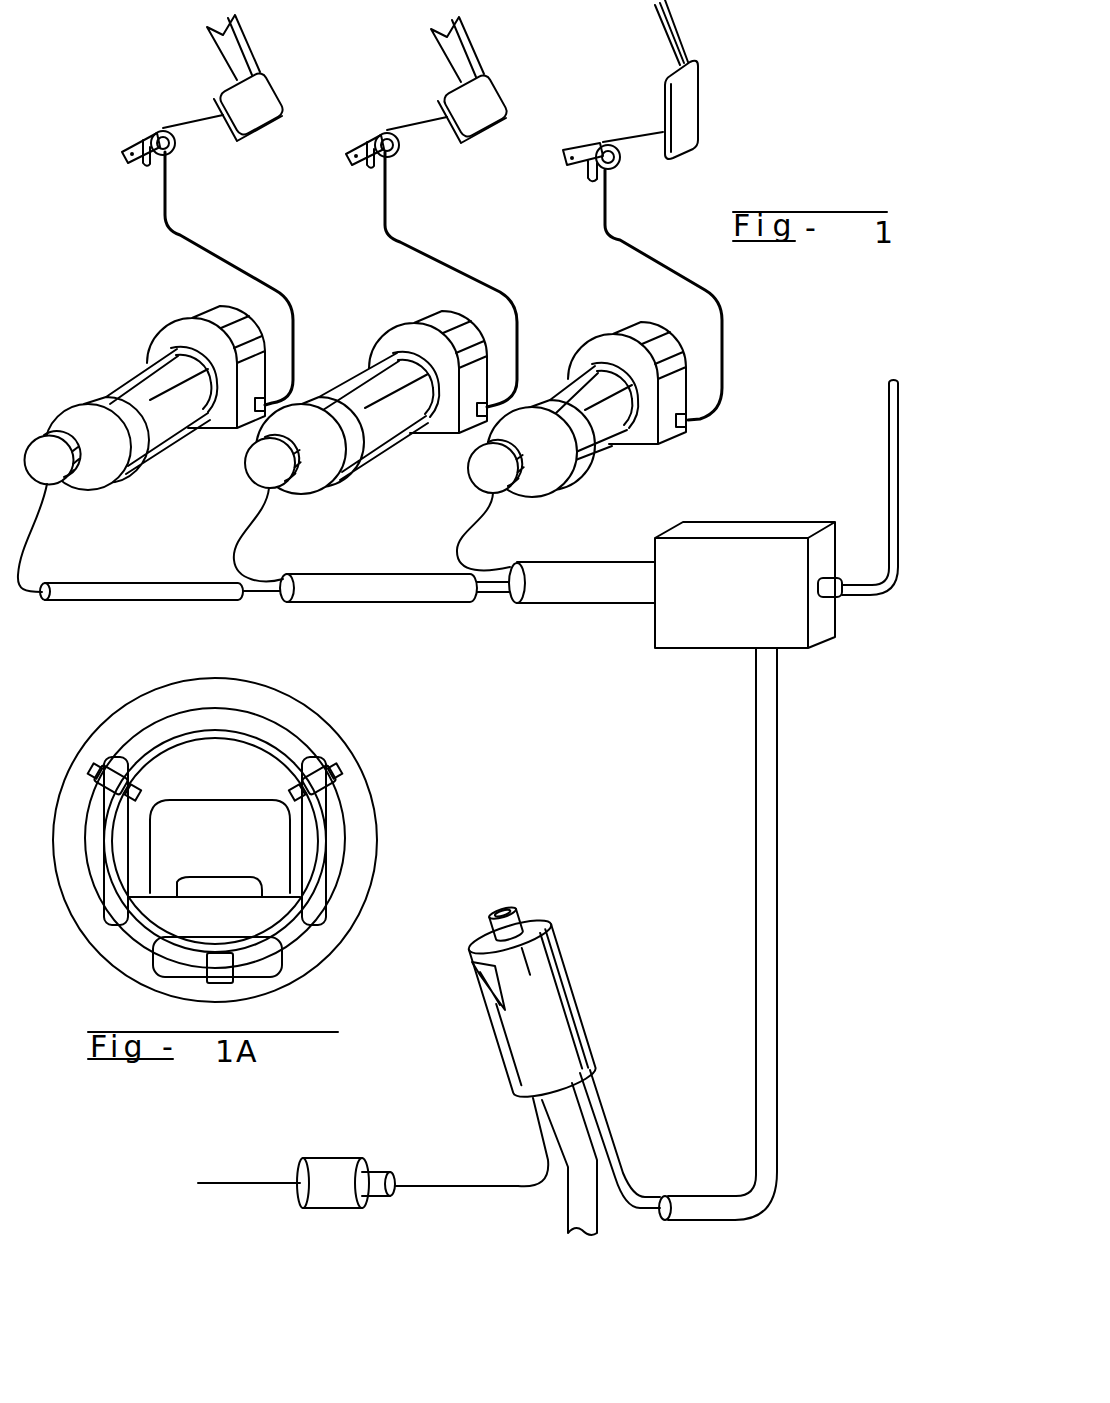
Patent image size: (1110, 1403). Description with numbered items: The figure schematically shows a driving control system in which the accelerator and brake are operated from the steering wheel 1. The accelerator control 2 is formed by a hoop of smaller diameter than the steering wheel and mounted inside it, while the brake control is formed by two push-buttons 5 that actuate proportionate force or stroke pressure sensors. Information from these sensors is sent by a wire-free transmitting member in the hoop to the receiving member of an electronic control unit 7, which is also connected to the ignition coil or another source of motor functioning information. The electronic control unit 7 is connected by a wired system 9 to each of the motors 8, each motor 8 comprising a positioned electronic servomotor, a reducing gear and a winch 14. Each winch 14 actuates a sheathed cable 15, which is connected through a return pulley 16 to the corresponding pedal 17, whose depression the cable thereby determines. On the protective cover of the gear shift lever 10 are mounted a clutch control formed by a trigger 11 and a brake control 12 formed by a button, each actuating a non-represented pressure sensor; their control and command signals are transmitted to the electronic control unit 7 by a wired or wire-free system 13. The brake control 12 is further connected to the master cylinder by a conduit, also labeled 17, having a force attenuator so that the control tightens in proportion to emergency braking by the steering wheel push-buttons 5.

In FIG. 1A, the steering wheel 1 is at (285, 713).
In FIG. 1A, the accelerator control 2 is at (317, 813).
In FIG. 1A, the push-buttons 5 is at (330, 772).
In FIG. 1, the electronic control unit 7 is at (742, 605).
In FIG. 1, the motors 8 is at (147, 430).
In FIG. 1, the wired system 9 is at (577, 587).
In FIG. 1, the gear shift lever 10 is at (577, 1053).
In FIG. 1, the trigger 11 is at (482, 983).
In FIG. 1, the brake control 12 is at (510, 903).
In FIG. 1, the wired or wire-free system 13 is at (756, 917).
In FIG. 1, the winch 14 is at (201, 313).
In FIG. 1, the sheathed cable 15 is at (203, 247).
In FIG. 1, the return pulley 16 is at (160, 135).
In FIG. 1, the pedal 17 is at (447, 1184).